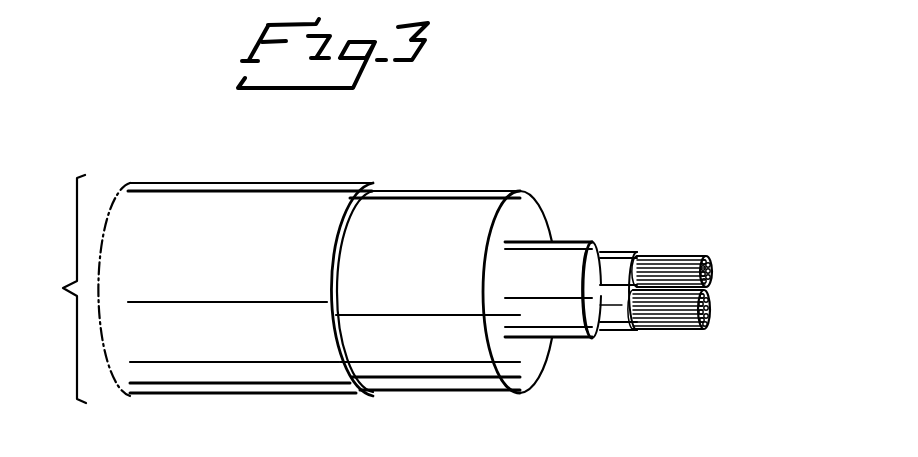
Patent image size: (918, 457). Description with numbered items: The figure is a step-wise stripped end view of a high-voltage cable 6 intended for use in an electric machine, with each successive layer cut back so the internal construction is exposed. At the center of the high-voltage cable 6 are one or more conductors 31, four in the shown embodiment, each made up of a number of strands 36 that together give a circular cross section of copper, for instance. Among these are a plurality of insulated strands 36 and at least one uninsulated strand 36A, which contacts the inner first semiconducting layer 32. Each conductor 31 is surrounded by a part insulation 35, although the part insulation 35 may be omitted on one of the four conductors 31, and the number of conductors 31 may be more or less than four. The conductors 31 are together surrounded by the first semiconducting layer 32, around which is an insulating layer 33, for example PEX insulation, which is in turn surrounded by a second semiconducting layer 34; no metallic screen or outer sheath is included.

The high-voltage cable 6 is at (59, 289).
The conductor 31 is at (714, 268).
The first semiconducting layer 32 is at (572, 249).
The insulating layer 33 is at (453, 199).
The second semiconducting layer 34 is at (254, 192).
The part insulation 35 is at (618, 262).
The strands 36 is at (708, 308).
The uninsulated strand 36A is at (655, 327).